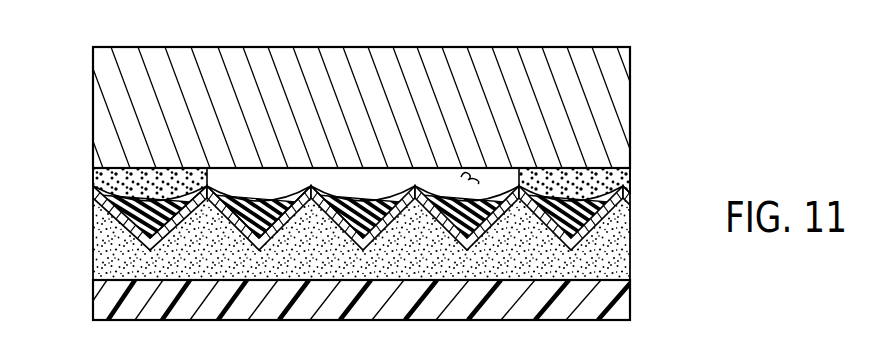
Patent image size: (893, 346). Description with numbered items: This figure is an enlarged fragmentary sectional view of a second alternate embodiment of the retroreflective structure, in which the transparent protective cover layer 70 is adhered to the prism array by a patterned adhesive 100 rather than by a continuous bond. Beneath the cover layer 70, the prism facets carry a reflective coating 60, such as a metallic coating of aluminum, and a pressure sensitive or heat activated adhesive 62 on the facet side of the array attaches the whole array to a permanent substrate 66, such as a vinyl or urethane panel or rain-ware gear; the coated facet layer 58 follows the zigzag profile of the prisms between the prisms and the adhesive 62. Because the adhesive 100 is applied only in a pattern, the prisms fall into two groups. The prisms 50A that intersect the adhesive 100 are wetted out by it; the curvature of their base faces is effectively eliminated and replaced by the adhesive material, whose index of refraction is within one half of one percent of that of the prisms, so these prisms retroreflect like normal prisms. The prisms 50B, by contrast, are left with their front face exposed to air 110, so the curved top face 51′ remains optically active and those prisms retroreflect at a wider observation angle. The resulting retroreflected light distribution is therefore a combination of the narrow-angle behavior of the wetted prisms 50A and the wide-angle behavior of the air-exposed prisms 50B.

The transparent protective cover layer 70 is at (615, 81).
The air 110 is at (468, 170).
The patterned adhesive 100 is at (125, 172).
The curved top surface 51′ is at (138, 200).
The prisms intersecting the adhesive 50A is at (177, 196).
The prisms with front face exposed to air 50B is at (268, 199).
The reflective coating 58 is at (590, 212).
The reflective coating 60 is at (112, 222).
The adhesive 62 is at (107, 255).
The permanent substrate 66 is at (634, 295).